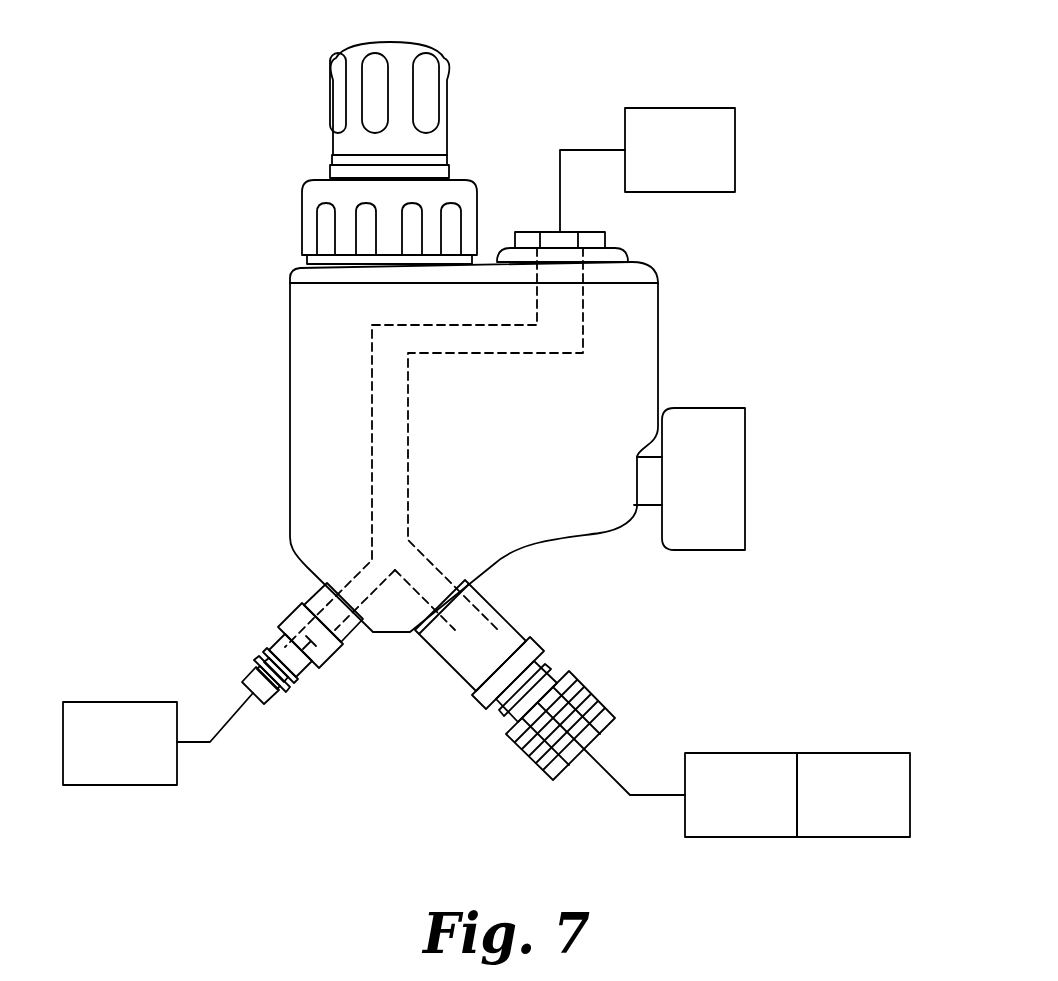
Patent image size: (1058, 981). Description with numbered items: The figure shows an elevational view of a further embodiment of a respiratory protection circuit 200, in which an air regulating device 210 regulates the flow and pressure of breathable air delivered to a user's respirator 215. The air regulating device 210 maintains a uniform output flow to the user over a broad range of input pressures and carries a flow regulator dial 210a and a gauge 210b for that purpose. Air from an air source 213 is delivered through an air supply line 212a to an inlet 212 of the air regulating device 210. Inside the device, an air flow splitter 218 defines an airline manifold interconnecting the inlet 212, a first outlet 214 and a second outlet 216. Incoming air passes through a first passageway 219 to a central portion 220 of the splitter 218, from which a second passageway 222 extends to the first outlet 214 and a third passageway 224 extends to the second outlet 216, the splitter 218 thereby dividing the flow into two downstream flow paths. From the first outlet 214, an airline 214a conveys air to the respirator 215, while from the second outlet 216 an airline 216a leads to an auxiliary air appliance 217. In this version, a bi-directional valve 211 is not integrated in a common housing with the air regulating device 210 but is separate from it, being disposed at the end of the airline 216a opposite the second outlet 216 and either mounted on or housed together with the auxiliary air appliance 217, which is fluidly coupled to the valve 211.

The respiratory protection circuit 200 is at (672, 56).
The air regulating device 210 is at (280, 314).
The flow regulator dial 210a is at (338, 122).
The gauge 210b is at (745, 477).
The bi-directional valve 211 is at (771, 813).
The inlet 212 is at (277, 703).
The air supply line 212a is at (197, 745).
The air source 213 is at (150, 757).
The first outlet 214 is at (525, 230).
The airline 214a is at (582, 147).
The respirator 215 is at (710, 166).
The second outlet 216 is at (613, 713).
The airline 216a is at (655, 797).
The auxiliary air appliance 217 is at (883, 813).
The air flow splitter 218 is at (395, 428).
The first passageway 219 is at (272, 632).
The central portion 220 is at (410, 537).
The second passageway 222 is at (387, 498).
The third passageway 224 is at (500, 604).